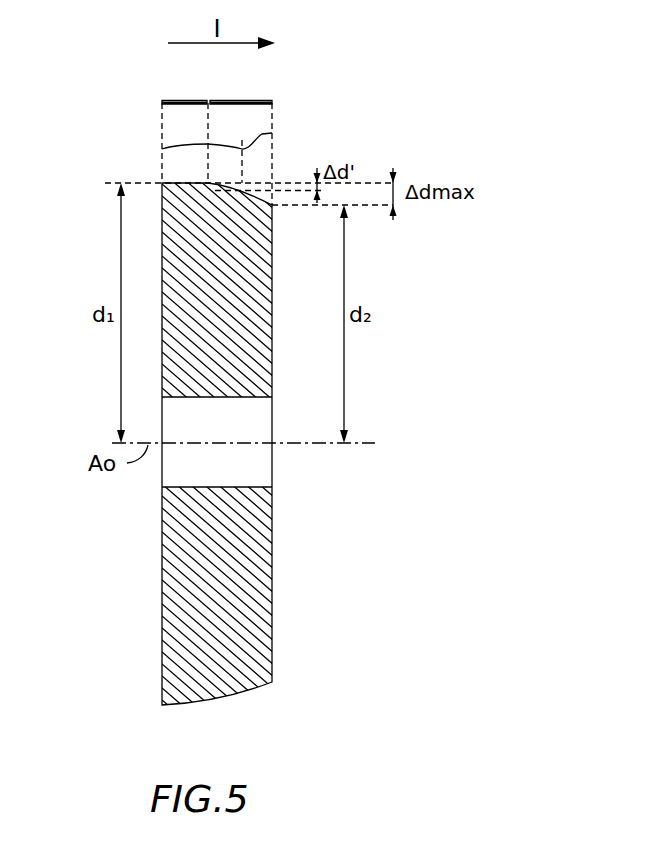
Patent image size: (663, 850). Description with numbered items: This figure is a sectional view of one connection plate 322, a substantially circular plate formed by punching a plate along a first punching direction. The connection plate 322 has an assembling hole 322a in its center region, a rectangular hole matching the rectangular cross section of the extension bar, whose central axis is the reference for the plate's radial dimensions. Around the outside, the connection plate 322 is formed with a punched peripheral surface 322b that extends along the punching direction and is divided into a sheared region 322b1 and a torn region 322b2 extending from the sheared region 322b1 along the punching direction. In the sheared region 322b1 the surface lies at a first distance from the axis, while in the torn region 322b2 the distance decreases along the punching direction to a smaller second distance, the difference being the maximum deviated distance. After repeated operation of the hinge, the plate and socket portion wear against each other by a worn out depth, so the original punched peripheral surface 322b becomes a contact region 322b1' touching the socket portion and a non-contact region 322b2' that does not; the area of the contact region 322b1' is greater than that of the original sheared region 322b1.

The connection plate 322 is at (487, 160).
The assembling hole 322a is at (183, 467).
The punched peripheral surface 322b is at (330, 103).
The sheared region 322b1 is at (147, 88).
The torn region 322b2 is at (248, 88).
The contact region 322b1' is at (142, 128).
The non-contact region 322b2' is at (283, 132).